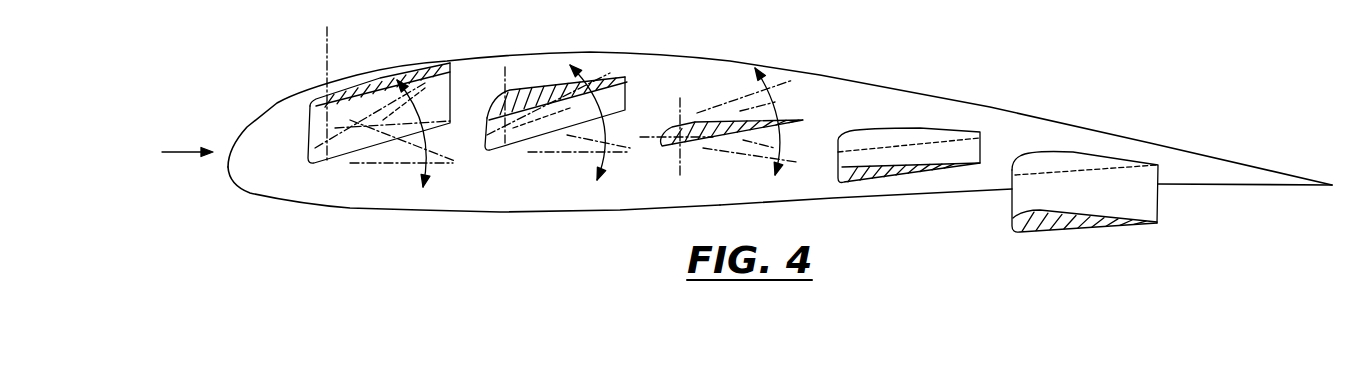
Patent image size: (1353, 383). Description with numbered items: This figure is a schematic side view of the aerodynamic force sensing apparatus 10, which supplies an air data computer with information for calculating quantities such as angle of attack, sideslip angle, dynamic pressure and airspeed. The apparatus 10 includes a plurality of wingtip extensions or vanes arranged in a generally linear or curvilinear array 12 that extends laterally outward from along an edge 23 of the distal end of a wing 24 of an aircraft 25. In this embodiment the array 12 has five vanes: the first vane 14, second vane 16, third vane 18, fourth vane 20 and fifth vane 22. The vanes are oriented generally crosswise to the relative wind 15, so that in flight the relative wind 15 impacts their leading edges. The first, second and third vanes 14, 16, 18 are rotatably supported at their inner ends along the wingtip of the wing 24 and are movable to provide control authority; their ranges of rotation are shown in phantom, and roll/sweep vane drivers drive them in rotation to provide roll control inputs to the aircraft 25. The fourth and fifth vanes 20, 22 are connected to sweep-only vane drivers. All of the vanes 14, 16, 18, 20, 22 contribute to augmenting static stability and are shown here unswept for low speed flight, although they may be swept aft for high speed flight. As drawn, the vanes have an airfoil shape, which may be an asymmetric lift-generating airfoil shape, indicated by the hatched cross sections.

The aerodynamic force sensing apparatus 10 is at (780, 137).
The array 12 is at (1102, 187).
The first vane 14 is at (443, 78).
The relative wind 15 is at (177, 152).
The second vane 16 is at (620, 87).
The third vane 18 is at (767, 118).
The fourth vane 20 is at (932, 163).
The fifth vane 22 is at (1147, 187).
The edge 23 is at (662, 88).
The wing 24 is at (495, 195).
The aircraft 25 is at (832, 202).